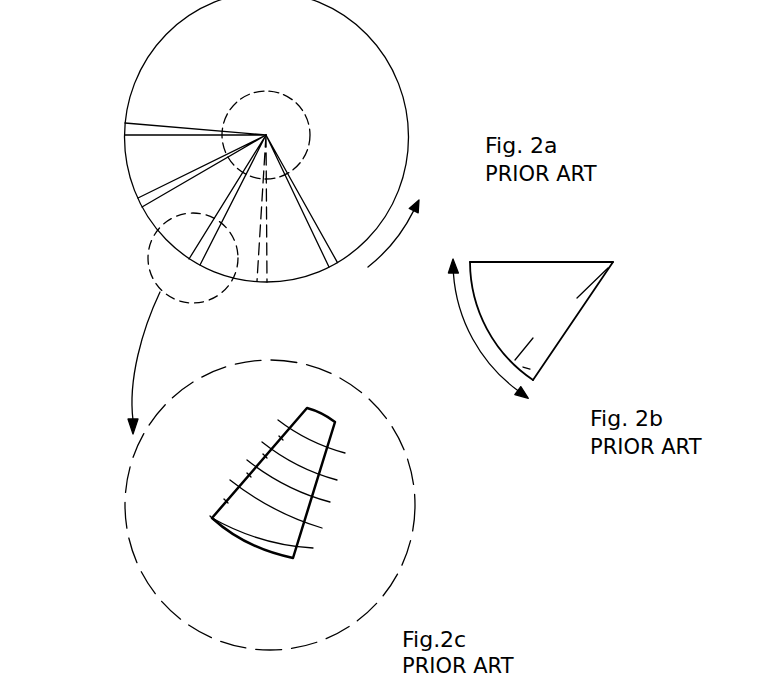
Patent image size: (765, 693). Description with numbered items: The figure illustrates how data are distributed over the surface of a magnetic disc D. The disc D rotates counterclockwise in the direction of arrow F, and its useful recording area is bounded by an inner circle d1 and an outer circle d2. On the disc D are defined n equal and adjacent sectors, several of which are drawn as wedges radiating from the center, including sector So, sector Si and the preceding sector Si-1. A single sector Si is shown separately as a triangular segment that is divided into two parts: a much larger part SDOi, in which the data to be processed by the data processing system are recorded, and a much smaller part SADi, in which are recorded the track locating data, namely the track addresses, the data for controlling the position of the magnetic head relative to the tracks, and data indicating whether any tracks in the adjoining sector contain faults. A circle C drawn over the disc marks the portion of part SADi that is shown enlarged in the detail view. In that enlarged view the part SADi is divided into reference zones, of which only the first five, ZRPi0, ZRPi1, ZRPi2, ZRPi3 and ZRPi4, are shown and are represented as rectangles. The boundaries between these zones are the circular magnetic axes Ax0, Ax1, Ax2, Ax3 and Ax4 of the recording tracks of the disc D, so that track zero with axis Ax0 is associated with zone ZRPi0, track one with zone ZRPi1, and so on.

In FIG. 2A, the outer circle d2 is at (367, 23).
In FIG. 2A, the disc D is at (367, 95).
In FIG. 2A, the inner circle d1 is at (288, 96).
In FIG. 2A, the sector Si is at (148, 226).
In FIG. 2B, the sector Si is at (481, 328).
In FIG. 2A, the sector Si-1 is at (246, 283).
In FIG. 2A, the sector So is at (315, 273).
In FIG. 2A, the arrow F is at (395, 233).
In FIG. 2A, the circle C is at (175, 262).
In FIG. 2C, the circle C is at (390, 580).
In FIG. 2B, the data part of sector SDOi is at (545, 258).
In FIG. 2B, the track locating data part of sector SADi is at (568, 330).
In FIG. 2C, the circular magnetic axis Ax4 is at (331, 445).
In FIG. 2C, the circular magnetic axis Ax3 is at (317, 471).
In FIG. 2C, the circular magnetic axis Ax2 is at (306, 493).
In FIG. 2C, the circular magnetic axis Ax1 is at (294, 514).
In FIG. 2C, the circular magnetic axis Ax0 is at (281, 546).
In FIG. 2C, the reference zone ZRPi4 is at (281, 438).
In FIG. 2C, the reference zone ZRPi3 is at (265, 456).
In FIG. 2C, the reference zone ZRPi2 is at (249, 475).
In FIG. 2C, the reference zone ZRPi1 is at (226, 501).
In FIG. 2C, the reference zone ZRPi0 is at (182, 496).